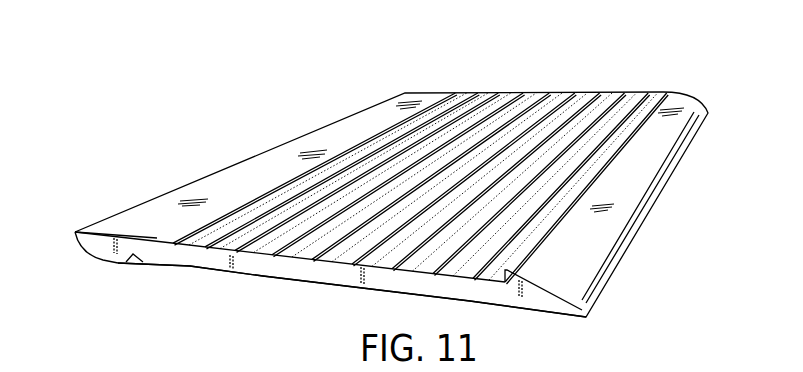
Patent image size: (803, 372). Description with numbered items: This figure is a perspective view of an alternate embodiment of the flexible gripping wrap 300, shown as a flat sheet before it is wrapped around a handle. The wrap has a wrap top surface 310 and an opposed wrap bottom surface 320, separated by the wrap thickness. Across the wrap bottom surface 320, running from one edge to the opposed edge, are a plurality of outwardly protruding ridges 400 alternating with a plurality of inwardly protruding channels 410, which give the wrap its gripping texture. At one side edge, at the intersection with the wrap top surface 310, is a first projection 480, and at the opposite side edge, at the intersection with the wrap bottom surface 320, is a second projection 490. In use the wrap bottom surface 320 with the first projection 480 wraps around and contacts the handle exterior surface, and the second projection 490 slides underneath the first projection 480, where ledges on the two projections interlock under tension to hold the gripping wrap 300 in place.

The flexible gripping wrap 300 is at (279, 83).
The wrap top surface 310 is at (273, 277).
The wrap bottom surface 320 is at (607, 108).
The outwardly protruding ridges 400 is at (157, 240).
The inwardly protruding channels 410 is at (173, 244).
The first projection 480 is at (118, 262).
The second projection 490 is at (550, 253).